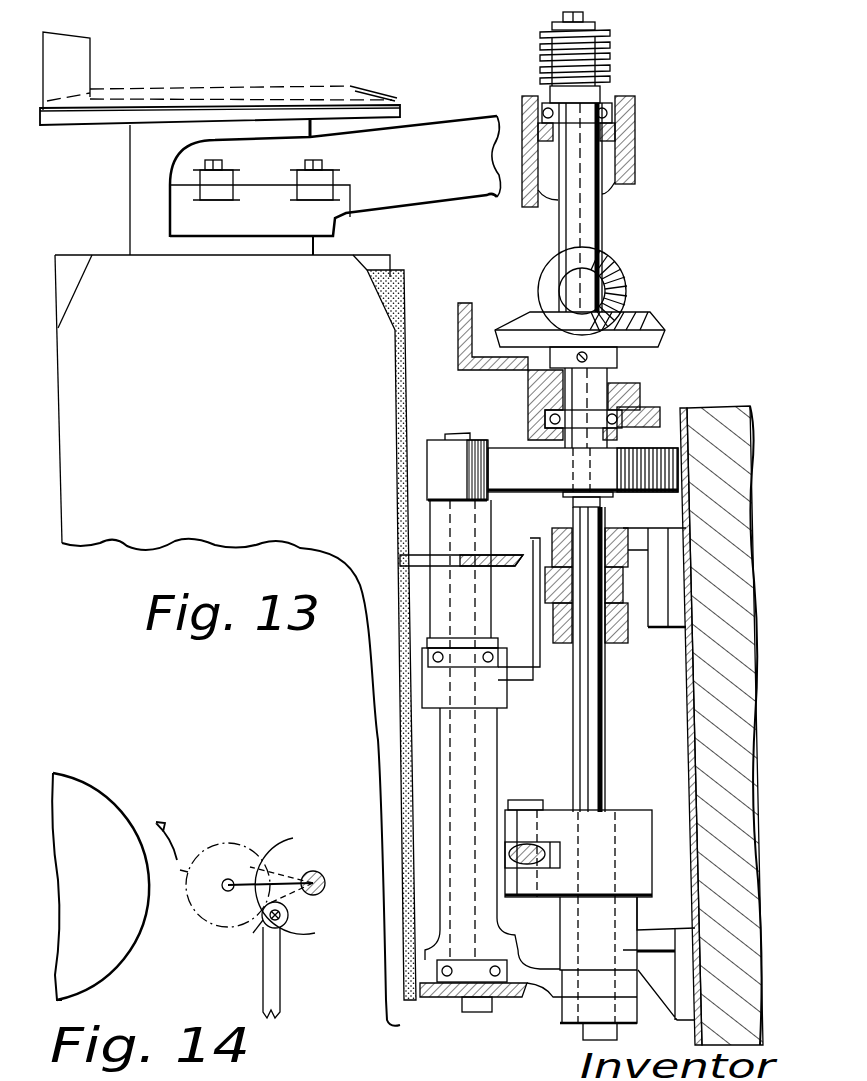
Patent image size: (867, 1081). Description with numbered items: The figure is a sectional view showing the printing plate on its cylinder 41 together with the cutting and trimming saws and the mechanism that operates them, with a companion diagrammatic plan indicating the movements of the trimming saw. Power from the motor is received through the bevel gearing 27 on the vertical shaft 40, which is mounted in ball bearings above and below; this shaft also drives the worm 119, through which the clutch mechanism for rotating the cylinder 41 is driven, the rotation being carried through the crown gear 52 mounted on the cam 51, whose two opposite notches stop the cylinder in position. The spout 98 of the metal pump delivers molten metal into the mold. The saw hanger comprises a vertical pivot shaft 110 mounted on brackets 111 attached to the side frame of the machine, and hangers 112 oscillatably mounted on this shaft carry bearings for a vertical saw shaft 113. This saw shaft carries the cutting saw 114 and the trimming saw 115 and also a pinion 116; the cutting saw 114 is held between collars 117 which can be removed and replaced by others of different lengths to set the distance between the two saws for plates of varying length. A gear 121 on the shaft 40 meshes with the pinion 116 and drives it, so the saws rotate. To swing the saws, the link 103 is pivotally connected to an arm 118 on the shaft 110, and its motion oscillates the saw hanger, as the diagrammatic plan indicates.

In FIG. 13, the bevel gearing 27 is at (660, 302).
In FIG. 13, the shaft 40 is at (593, 236).
In FIG. 13, the cylinder 41 is at (82, 442).
In FIG. 14, the cylinder 41 is at (77, 780).
In FIG. 13, the cam 51 is at (90, 113).
In FIG. 13, the crown gear 52 is at (381, 84).
In FIG. 13, the spout 98 is at (441, 187).
In FIG. 13, the link 103 is at (527, 845).
In FIG. 14, the link 103 is at (266, 972).
In FIG. 13, the vertical pivot shaft 110 is at (593, 704).
In FIG. 14, the vertical pivot shaft 110 is at (310, 875).
In FIG. 13, the brackets 111 is at (642, 532).
In FIG. 13, the hangers 112 is at (525, 673).
In FIG. 13, the saw shaft 113 is at (480, 762).
In FIG. 14, the saw shaft 113 is at (233, 883).
In FIG. 13, the cutting saw 114 is at (513, 555).
In FIG. 14, the cutting saw 114 is at (210, 853).
In FIG. 13, the trimming saw 115 is at (522, 990).
In FIG. 13, the pinion 116 is at (438, 445).
In FIG. 13, the collars 117 is at (437, 590).
In FIG. 13, the arm 118 is at (633, 822).
In FIG. 13, the worm 119 is at (610, 69).
In FIG. 13, the gear 121 is at (528, 480).